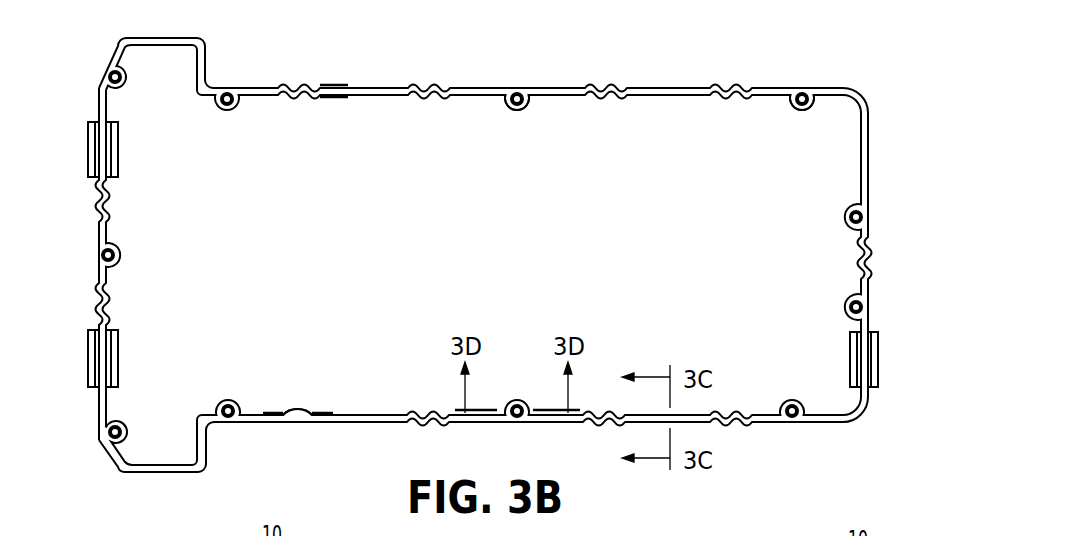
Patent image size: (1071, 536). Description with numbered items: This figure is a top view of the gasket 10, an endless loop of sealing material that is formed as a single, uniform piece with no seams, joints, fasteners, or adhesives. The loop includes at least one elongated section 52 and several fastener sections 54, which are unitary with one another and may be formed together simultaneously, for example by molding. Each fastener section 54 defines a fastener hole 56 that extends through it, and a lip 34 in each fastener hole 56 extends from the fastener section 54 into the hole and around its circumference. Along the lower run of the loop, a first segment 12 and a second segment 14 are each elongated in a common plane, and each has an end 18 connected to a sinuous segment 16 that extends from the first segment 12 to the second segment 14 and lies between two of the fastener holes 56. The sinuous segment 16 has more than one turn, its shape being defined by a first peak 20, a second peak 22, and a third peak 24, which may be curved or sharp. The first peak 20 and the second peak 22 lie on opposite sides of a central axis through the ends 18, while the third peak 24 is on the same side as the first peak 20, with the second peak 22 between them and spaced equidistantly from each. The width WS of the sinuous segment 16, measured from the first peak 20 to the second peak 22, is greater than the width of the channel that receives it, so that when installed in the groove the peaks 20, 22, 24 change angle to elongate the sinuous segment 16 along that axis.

The gasket 10 is at (850, 63).
The first segment 12 is at (256, 415).
The second segment 14 is at (367, 419).
The sinuous segment 16 is at (323, 430).
The end 18 is at (260, 423).
The first peak 20 is at (288, 413).
The second peak 22 is at (299, 411).
The third peak 24 is at (317, 413).
The lip 34 is at (109, 76).
The elongated section 52 is at (788, 82).
The fastener section 54 is at (518, 111).
The fastener hole 56 is at (228, 110).
The width of the sinuous segment WS is at (340, 103).